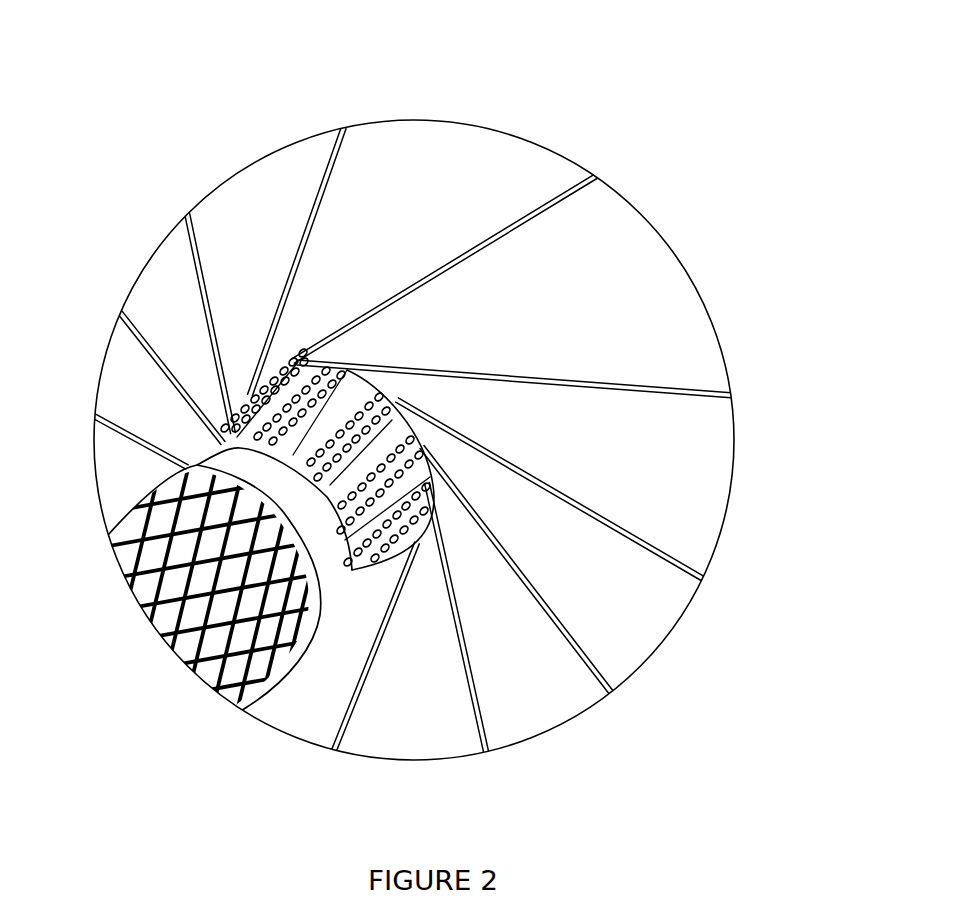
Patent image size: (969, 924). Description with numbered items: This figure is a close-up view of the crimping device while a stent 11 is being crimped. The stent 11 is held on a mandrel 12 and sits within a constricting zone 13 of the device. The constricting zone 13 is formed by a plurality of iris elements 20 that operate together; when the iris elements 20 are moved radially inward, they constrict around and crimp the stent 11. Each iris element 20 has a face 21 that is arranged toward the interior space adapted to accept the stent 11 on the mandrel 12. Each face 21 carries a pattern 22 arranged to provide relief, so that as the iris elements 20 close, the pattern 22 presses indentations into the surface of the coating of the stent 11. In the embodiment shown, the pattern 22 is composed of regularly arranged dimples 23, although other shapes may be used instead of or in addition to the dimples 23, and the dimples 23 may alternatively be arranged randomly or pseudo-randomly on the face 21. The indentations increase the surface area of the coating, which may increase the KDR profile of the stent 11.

The stent 11 is at (195, 477).
The mandrel 12 is at (325, 592).
The constricting zone 13 is at (604, 84).
The iris element 20 is at (437, 142).
The face 21 is at (348, 467).
The pattern 22 is at (400, 483).
The dimple 23 is at (368, 425).